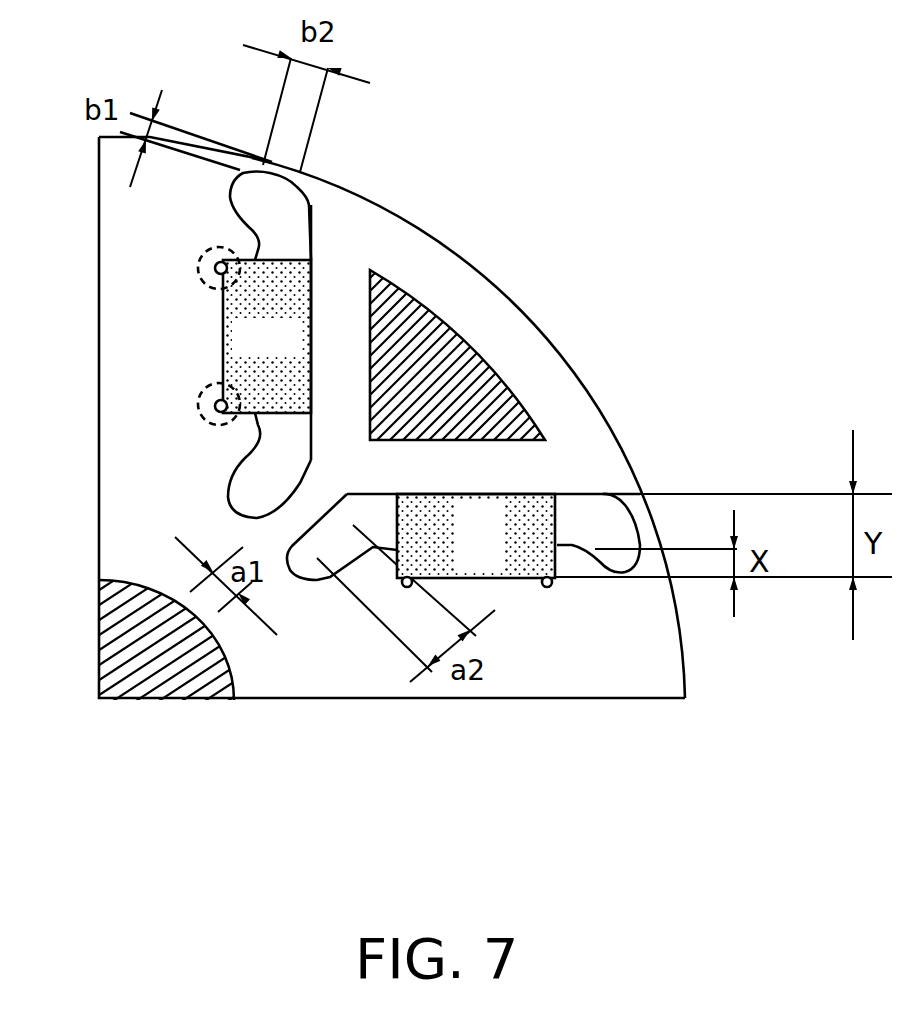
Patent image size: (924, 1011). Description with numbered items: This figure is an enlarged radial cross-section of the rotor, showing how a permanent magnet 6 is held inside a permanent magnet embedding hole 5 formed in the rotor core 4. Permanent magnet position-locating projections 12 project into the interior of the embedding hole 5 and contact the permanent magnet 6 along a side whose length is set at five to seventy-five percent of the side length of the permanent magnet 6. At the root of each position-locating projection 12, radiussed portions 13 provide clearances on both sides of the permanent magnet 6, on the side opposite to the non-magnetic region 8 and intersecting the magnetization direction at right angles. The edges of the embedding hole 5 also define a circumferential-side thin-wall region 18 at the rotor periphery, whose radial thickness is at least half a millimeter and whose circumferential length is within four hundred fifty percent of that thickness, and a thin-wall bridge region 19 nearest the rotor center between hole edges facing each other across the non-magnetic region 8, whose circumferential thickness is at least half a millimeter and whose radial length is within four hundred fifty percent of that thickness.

The rotor core 4 is at (573, 650).
The permanent magnet embedding hole 5 is at (587, 507).
The permanent magnet 6 is at (513, 498).
The non-magnetic region 8 is at (453, 367).
The permanent magnet position-locating projection 12 is at (253, 427).
The radiussed portion 13 is at (207, 392).
The circumferential-side thin-wall region 18 is at (290, 160).
The thin-wall bridge region 19 is at (290, 517).